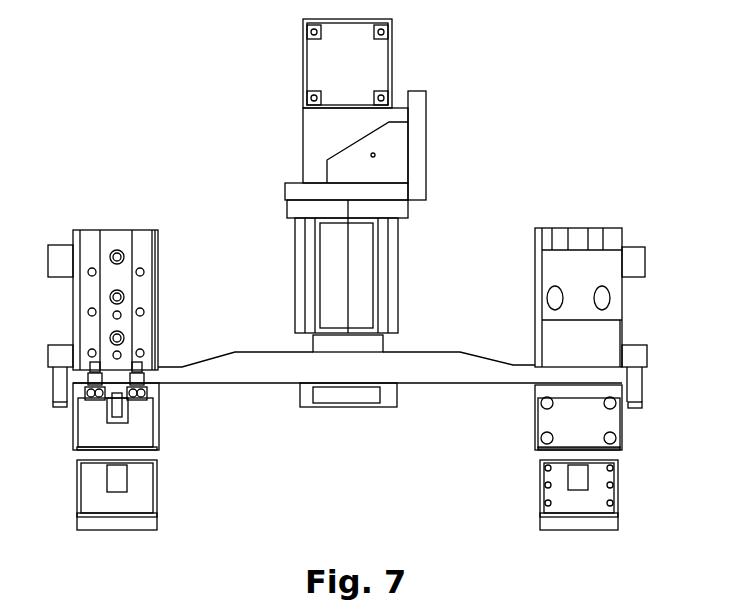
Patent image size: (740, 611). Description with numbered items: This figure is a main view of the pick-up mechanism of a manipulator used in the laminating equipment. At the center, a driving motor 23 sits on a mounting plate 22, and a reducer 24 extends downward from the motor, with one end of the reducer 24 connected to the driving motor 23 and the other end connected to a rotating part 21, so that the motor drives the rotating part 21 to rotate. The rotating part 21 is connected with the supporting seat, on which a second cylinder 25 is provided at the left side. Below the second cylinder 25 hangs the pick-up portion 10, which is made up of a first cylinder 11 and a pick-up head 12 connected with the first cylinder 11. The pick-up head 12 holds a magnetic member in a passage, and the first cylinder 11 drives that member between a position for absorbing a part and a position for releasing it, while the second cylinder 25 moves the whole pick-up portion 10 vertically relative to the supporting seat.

The pick-up portion 10 is at (209, 456).
The first cylinder 11 is at (143, 387).
The pick-up head 12 is at (158, 513).
The rotating part 21 is at (452, 383).
The mounting plate 22 is at (287, 182).
The driving motor 23 is at (303, 110).
The reducer 24 is at (380, 287).
The second cylinder 25 is at (117, 337).